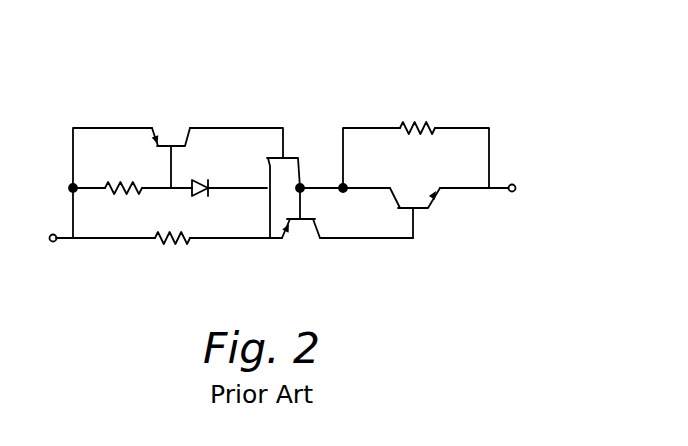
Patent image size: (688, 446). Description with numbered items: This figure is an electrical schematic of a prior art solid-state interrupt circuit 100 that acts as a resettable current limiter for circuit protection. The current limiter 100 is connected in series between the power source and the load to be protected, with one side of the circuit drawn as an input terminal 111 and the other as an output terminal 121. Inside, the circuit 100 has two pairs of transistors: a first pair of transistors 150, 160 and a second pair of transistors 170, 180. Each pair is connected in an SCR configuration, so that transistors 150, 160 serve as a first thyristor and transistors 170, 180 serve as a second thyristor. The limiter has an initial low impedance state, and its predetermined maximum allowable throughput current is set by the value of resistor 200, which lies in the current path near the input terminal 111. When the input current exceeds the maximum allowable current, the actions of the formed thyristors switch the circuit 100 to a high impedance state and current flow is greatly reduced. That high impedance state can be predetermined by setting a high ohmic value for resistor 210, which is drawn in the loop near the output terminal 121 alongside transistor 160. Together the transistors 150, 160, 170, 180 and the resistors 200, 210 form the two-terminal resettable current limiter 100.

The solid state interrupt circuit 100 is at (443, 208).
The input terminal 111 is at (60, 241).
The output terminal 121 is at (503, 186).
The transistor 150 is at (300, 226).
The transistor 160 is at (422, 211).
The transistor 170 is at (170, 142).
The transistor 180 is at (292, 161).
The resistor 200 is at (177, 250).
The resistor 210 is at (407, 120).